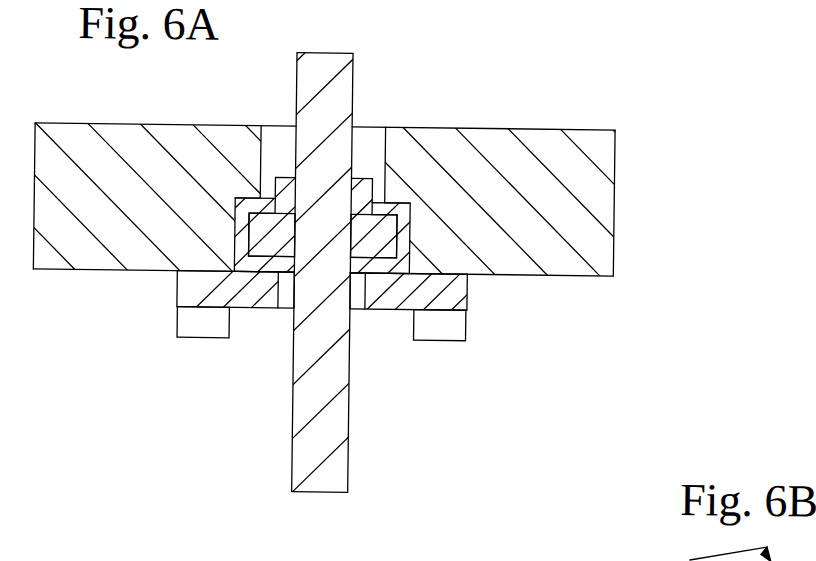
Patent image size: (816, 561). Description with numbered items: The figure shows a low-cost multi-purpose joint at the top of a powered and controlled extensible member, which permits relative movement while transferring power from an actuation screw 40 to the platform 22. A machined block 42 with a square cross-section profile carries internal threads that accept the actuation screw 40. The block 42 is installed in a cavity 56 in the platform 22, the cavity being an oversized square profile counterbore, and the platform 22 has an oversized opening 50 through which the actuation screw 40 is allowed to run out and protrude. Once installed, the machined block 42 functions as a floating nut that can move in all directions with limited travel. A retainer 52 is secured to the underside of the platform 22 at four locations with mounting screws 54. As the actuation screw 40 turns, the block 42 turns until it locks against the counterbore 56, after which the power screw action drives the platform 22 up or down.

The platform 22 is at (612, 250).
The actuation screw 40 is at (295, 460).
The machined block 42 is at (249, 248).
The oversized opening 50 is at (370, 127).
The retainer 52 is at (468, 291).
The mounting screws 54 is at (198, 340).
The cavity 56 is at (412, 212).